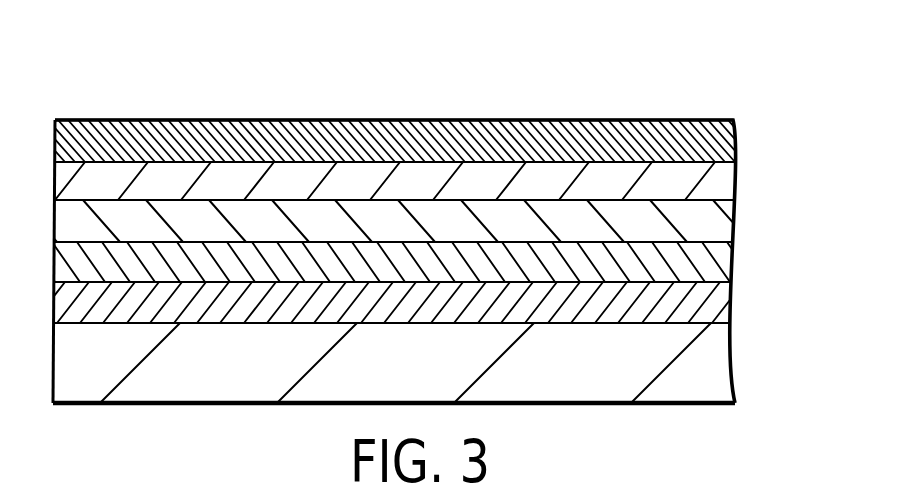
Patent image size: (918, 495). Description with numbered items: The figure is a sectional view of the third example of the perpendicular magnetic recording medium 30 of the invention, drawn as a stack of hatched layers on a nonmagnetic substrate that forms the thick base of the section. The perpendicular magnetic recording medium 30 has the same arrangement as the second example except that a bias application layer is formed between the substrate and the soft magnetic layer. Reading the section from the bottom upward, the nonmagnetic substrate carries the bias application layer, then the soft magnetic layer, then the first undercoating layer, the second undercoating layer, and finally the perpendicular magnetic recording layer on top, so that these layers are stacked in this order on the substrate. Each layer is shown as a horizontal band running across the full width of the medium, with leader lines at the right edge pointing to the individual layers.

The perpendicular magnetic recording medium 30 is at (713, 82).